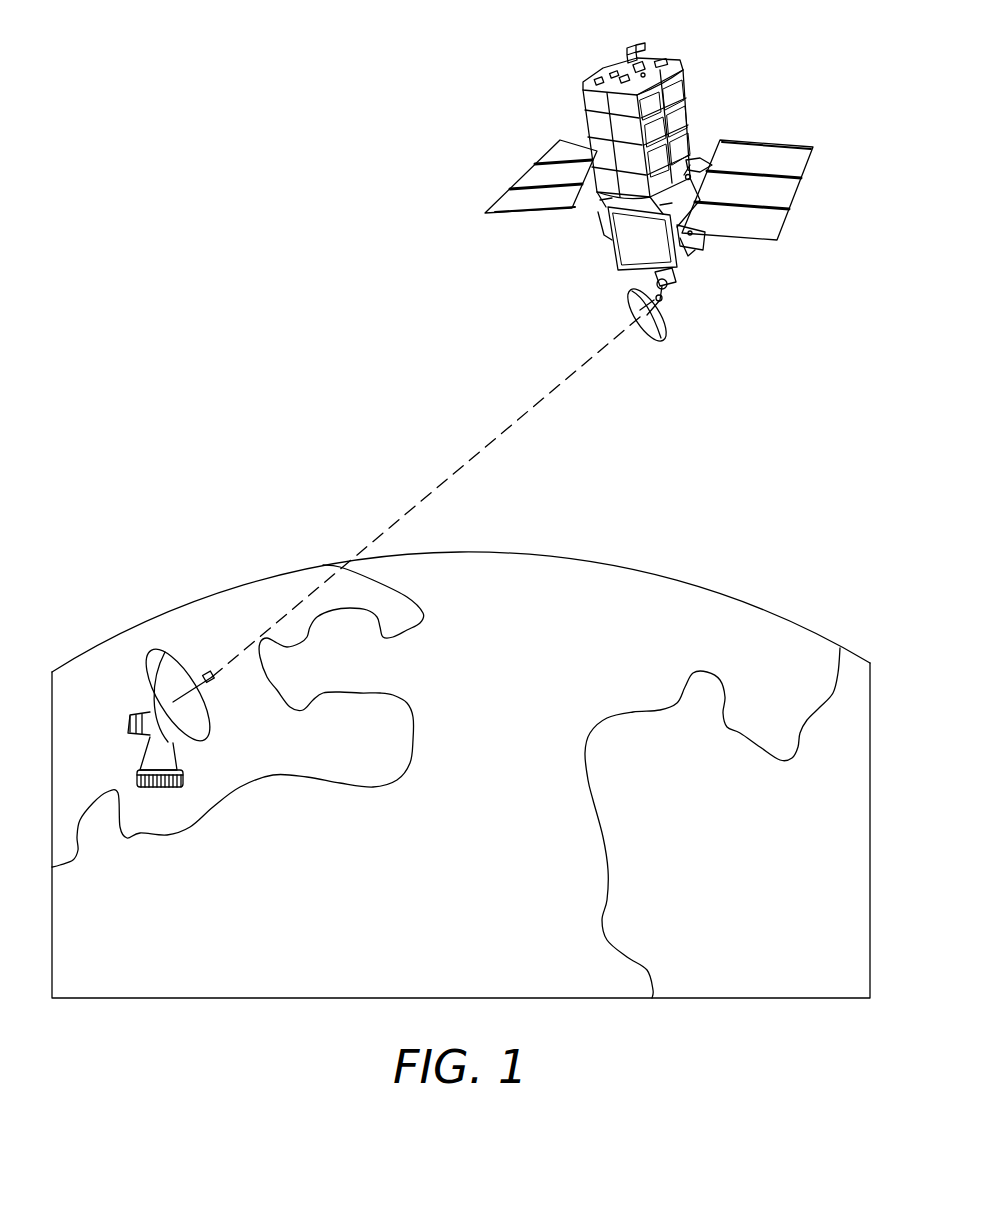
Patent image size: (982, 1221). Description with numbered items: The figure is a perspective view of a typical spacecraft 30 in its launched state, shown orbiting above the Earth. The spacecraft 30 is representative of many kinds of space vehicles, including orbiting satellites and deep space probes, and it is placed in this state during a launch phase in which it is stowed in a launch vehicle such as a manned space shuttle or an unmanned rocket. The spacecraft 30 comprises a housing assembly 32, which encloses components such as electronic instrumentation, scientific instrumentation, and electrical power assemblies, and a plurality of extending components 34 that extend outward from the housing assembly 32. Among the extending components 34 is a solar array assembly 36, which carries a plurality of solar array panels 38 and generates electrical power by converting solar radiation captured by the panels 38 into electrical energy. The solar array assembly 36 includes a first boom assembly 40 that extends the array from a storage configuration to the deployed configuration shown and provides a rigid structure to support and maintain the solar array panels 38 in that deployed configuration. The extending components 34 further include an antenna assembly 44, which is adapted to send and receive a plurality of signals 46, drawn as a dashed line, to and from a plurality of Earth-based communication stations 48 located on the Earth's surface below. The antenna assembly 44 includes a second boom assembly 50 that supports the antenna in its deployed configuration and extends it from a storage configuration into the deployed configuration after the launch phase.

The spacecraft 30 is at (528, 54).
The housing assembly 32 is at (680, 67).
The extending components 34 is at (417, 191).
The solar array assembly 36 is at (783, 143).
The solar array panels 38 is at (770, 222).
The first boom assembly 40 is at (694, 166).
The antenna assembly 44 is at (707, 370).
The signals 46 is at (473, 455).
The Earth-based communication stations 48 is at (147, 647).
The second boom assembly 50 is at (675, 283).